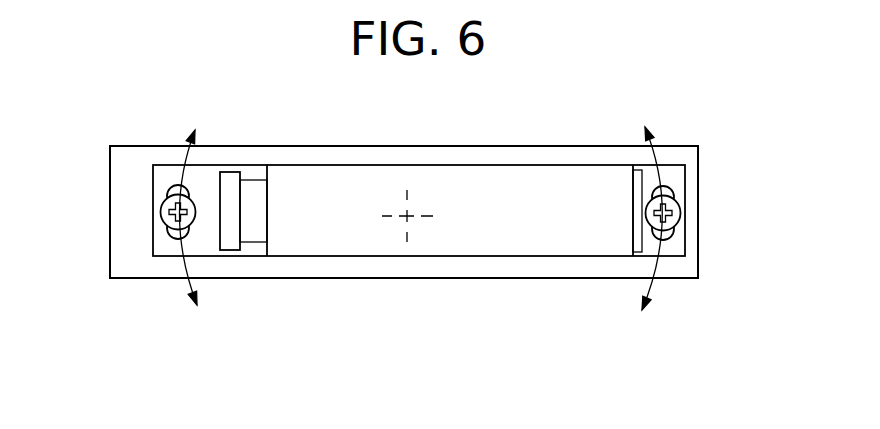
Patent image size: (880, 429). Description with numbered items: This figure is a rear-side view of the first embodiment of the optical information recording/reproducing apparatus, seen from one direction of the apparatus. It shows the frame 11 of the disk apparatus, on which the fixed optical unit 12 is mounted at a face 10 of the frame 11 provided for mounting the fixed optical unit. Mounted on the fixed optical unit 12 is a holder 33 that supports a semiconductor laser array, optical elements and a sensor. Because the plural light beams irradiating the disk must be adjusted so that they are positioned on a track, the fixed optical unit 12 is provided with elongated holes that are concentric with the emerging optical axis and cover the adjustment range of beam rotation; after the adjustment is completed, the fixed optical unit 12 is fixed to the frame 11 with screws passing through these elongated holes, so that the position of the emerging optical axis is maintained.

The face for mounting the fixed optical unit 10 is at (123, 241).
The frame 11 is at (543, 158).
The fixed optical unit 12 is at (331, 176).
The holder 33 is at (253, 226).